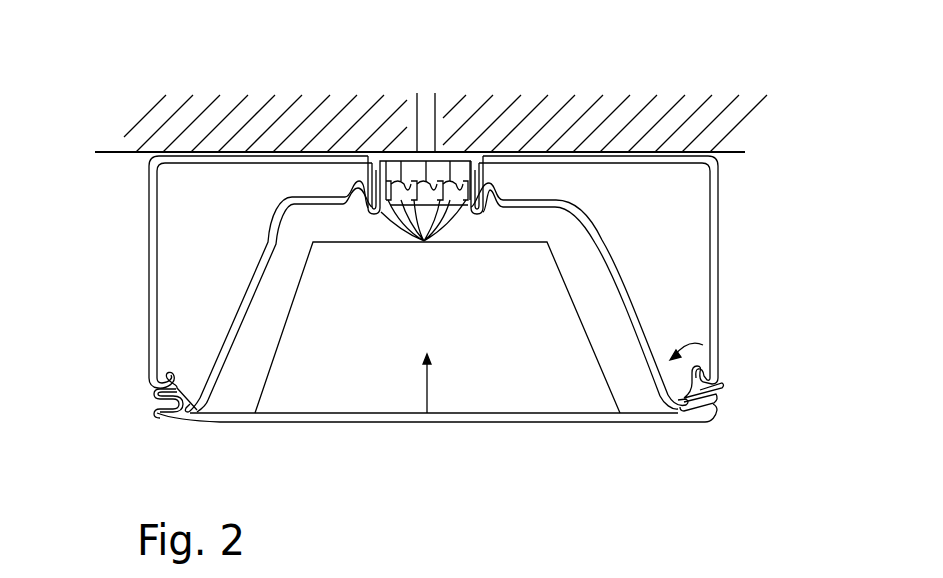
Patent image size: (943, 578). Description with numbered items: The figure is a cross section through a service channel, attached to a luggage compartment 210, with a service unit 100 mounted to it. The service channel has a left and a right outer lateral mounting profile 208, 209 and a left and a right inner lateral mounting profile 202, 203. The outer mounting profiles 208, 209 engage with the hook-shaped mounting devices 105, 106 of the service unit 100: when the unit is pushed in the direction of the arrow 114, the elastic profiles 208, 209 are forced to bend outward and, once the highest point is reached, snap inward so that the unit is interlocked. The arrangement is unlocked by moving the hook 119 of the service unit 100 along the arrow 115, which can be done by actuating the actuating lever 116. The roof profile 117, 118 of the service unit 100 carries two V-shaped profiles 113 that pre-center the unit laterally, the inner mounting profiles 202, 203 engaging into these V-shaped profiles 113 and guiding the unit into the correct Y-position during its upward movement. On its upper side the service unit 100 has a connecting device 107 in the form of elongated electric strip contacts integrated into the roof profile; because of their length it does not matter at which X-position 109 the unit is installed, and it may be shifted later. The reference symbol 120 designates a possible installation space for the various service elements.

The service unit 100 is at (247, 428).
The mounting device 105 is at (162, 418).
The mounting device 106 is at (708, 415).
The connecting device 107 is at (427, 187).
The X-position 109 is at (640, 0).
The V-shaped profile 113 is at (503, 197).
The arrow 114 is at (428, 383).
The arrow 115 is at (718, 364).
The actuating lever 116 is at (722, 394).
The roof profile 117 is at (268, 240).
The roof profile 118 is at (604, 243).
The hook 119 is at (687, 374).
The installation space 120 is at (345, 393).
The inner lateral mounting profile 202 is at (364, 176).
The inner lateral mounting profile 203 is at (487, 175).
The outer lateral mounting profile 208 is at (149, 238).
The outer lateral mounting profile 209 is at (718, 239).
The luggage compartment 210 is at (240, 130).